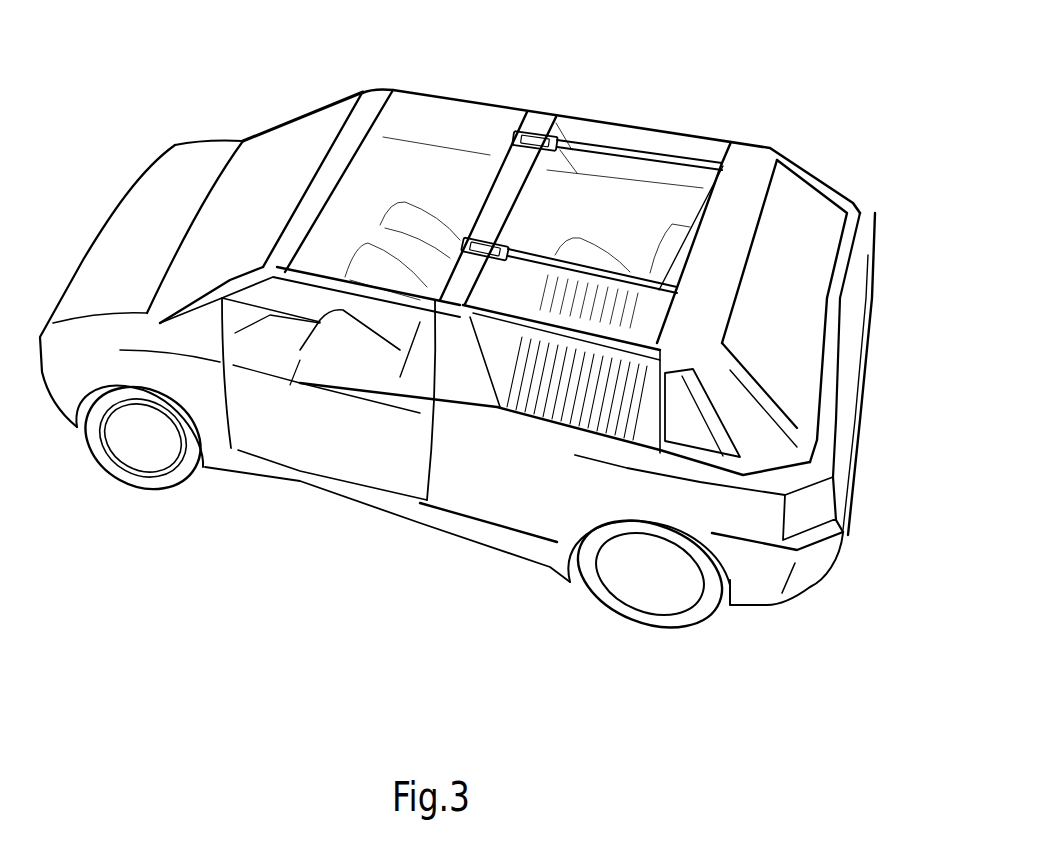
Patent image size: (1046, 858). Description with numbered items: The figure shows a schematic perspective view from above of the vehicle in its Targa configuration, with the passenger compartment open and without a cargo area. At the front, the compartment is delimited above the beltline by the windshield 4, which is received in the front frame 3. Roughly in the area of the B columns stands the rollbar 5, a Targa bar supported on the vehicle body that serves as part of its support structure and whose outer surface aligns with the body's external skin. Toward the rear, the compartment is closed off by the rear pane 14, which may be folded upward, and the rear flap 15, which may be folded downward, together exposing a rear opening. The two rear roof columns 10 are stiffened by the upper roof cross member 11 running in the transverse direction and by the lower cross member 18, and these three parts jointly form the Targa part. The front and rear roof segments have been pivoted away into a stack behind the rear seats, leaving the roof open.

The front frame 3 is at (358, 117).
The windshield 4 is at (288, 137).
The rollbar 5 is at (515, 157).
The upper roof cross member 11 is at (725, 205).
The rear pane 14 is at (793, 203).
The lower cross member 18 is at (843, 267).
The rear flap 15 is at (843, 362).
The rear roof columns 10 is at (778, 452).